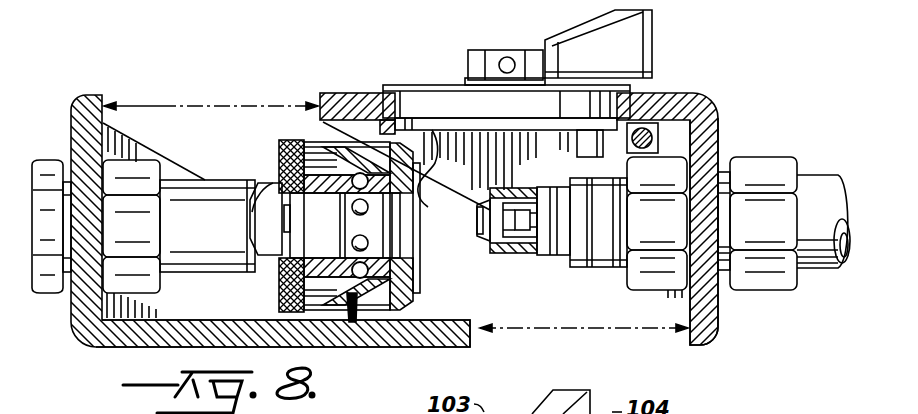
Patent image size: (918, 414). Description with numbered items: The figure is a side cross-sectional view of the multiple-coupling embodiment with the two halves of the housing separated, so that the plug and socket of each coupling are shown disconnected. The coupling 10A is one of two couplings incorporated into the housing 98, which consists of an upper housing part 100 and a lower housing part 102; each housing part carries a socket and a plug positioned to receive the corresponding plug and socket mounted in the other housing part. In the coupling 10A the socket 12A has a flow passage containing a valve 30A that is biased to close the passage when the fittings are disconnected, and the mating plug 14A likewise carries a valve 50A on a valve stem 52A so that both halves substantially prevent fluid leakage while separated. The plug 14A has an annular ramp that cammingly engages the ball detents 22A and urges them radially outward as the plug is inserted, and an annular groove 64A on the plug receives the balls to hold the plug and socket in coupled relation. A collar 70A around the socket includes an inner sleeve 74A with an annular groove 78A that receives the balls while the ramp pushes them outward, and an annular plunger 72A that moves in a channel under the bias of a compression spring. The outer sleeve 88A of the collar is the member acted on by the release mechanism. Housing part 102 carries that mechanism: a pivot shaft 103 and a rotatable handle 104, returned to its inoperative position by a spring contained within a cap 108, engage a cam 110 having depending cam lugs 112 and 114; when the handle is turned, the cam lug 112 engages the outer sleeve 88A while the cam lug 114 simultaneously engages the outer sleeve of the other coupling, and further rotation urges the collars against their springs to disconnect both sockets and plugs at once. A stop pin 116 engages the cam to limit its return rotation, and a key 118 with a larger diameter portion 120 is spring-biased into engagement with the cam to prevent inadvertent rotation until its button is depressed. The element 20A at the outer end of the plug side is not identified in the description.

The coupling 10A is at (510, 295).
The socket 12A is at (213, 172).
The plug 14A is at (604, 278).
The fluid conduit 20A is at (817, 267).
The ball detents 22A is at (372, 190).
The valve 30A is at (263, 232).
The valve 50A is at (500, 243).
The valve stem 52A is at (537, 203).
The annular groove 64A is at (580, 262).
The collar 70A is at (311, 128).
The annular plunger 72A is at (428, 296).
The inner sleeve 74A is at (353, 322).
The annular groove 78A is at (370, 271).
The outer sleeve 88A is at (282, 138).
The housing 98 is at (735, 105).
The upper housing part 100 is at (127, 347).
The lower housing part 102 is at (720, 307).
The pivot shaft 103 is at (497, 48).
The rotatable handle 104 is at (645, 33).
The cap 108 is at (442, 84).
The cam 110 is at (432, 118).
The cam lug 112 is at (424, 200).
The cam lug 114 is at (580, 145).
The stop pin 116 is at (388, 127).
The key 118 is at (668, 135).
The larger diameter portion 120 is at (660, 93).